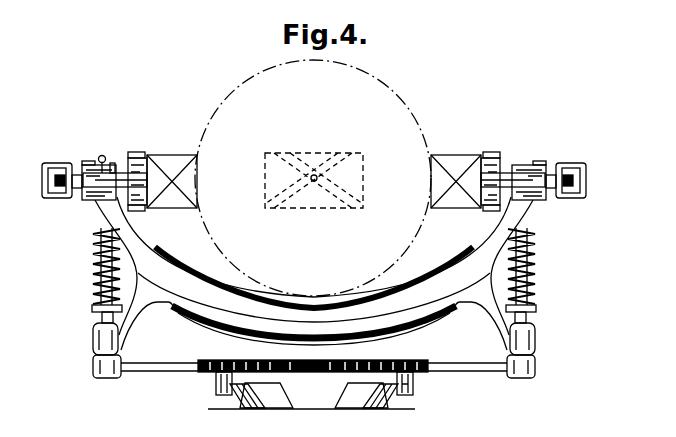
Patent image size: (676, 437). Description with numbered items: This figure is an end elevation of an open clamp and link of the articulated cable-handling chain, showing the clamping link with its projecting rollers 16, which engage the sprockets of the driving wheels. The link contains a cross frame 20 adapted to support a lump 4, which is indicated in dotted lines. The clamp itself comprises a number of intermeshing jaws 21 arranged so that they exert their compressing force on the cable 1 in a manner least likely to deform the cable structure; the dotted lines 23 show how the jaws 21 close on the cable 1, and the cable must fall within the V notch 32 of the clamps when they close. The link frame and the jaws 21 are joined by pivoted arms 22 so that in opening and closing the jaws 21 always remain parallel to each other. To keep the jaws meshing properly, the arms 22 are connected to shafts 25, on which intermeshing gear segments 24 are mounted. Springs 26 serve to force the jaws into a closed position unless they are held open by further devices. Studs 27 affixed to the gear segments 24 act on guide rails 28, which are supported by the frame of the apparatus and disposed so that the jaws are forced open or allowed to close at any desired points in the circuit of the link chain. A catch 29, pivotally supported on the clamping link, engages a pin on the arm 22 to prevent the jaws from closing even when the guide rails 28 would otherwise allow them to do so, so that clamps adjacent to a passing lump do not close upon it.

The cable 1 is at (315, 174).
The lump 4 is at (370, 72).
The projecting rollers 16 is at (62, 176).
The cross frames 20 is at (188, 320).
The intermeshing jaws 21 is at (165, 163).
The pivoted arms 22 is at (90, 201).
The dotted lines 23 is at (314, 192).
The intermeshing gear segments 24 is at (223, 362).
The shafts 25 is at (100, 296).
The springs 26 is at (100, 253).
The studs 27 is at (415, 378).
The guide rails 28 is at (343, 383).
The catch 29 is at (118, 163).
The V notch 32 is at (177, 190).